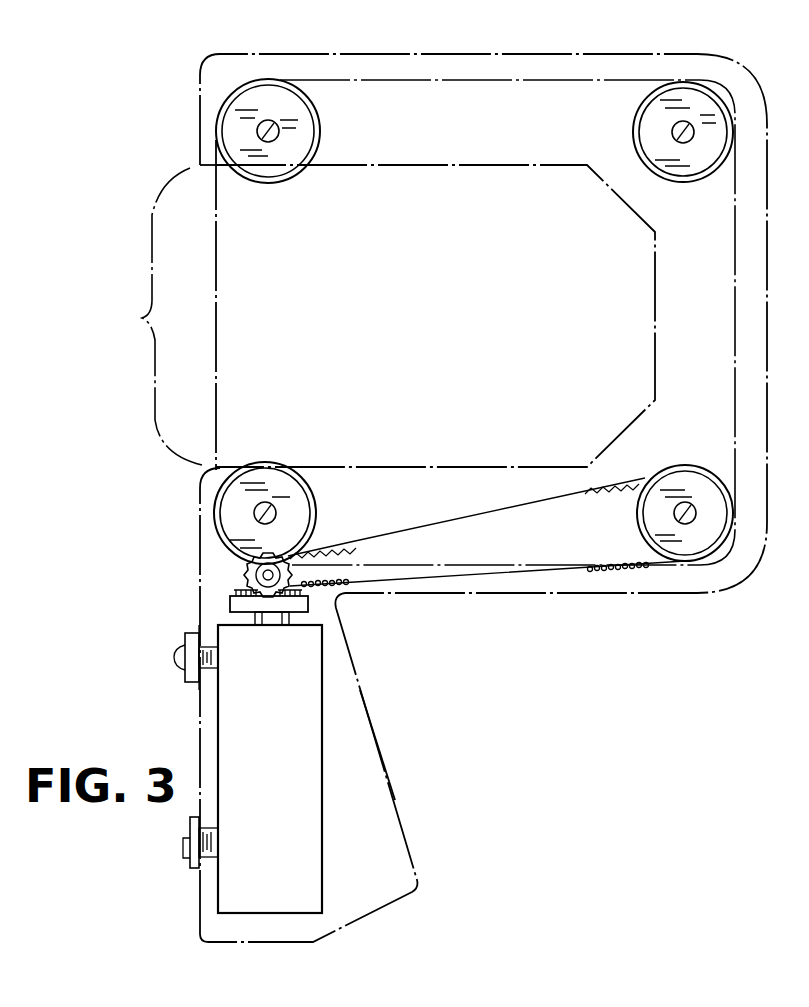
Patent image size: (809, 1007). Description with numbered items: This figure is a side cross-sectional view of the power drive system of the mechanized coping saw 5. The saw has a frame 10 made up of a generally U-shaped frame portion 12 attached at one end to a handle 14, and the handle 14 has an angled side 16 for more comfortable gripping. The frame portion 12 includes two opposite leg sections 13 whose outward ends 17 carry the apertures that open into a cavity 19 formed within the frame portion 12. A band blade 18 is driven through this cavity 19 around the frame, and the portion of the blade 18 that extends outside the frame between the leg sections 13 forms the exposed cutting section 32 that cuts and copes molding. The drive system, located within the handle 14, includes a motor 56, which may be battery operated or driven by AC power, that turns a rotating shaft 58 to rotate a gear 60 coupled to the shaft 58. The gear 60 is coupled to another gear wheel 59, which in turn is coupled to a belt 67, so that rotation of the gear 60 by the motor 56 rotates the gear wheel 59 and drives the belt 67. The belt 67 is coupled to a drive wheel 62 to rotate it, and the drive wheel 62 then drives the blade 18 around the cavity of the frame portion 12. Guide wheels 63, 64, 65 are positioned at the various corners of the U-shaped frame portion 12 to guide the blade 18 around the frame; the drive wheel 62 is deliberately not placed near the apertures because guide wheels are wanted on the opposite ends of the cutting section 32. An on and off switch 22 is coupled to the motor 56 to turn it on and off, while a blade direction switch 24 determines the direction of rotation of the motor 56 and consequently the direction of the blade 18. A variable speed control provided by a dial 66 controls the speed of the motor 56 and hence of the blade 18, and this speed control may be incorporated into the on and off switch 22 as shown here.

The coping saw 5 is at (486, 704).
The frame 10 is at (488, 664).
The U-shaped frame portion 12 is at (808, 304).
The leg sections 13 is at (432, 168).
The handle 14 is at (380, 749).
The angled side 16 is at (358, 681).
The outward ends 17 is at (202, 86).
The band blade 18 is at (218, 350).
The cavity 19 is at (486, 306).
The on and off switch 22 is at (186, 625).
The blade direction switch 24 is at (190, 830).
The cutting section 32 is at (147, 316).
The motor 56 is at (322, 828).
The rotating shaft 58 is at (298, 628).
The gear wheel 59 is at (246, 571).
The gear 60 is at (312, 603).
The drive wheel 62 is at (716, 484).
The guide wheel 63 is at (648, 122).
The guide wheel 64 is at (292, 128).
The guide wheel 65 is at (288, 480).
The dial 66 is at (175, 660).
The belt 67 is at (346, 540).